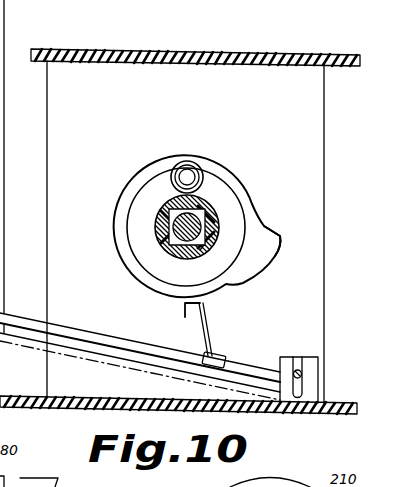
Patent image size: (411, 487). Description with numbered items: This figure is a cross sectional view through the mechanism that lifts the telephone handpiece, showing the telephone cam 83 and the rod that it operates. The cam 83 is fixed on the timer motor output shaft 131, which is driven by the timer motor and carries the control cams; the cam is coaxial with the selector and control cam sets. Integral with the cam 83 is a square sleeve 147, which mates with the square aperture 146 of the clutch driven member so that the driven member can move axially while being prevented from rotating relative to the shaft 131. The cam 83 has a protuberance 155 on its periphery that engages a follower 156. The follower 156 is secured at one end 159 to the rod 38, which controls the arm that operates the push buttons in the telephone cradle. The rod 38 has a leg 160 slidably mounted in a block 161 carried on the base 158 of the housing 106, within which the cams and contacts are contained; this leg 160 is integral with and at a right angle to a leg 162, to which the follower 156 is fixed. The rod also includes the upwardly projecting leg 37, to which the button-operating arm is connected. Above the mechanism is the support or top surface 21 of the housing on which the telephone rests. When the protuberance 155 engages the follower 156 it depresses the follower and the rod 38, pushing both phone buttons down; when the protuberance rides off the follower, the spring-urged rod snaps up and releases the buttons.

The support or top surface 21 is at (230, 53).
The leg 37 is at (6, 6).
The rod 38 is at (73, 327).
The telephone cam 83 is at (228, 169).
The housing 106 is at (318, 172).
The timer motor output shaft 131 is at (201, 228).
The square aperture 146 is at (210, 240).
The square sleeve 147 is at (200, 253).
The protuberance 155 is at (274, 259).
The follower 156 is at (208, 313).
The base 158 is at (343, 412).
The end 159 is at (203, 352).
The leg 160 is at (302, 374).
The block 161 is at (318, 388).
The leg 162 is at (112, 338).